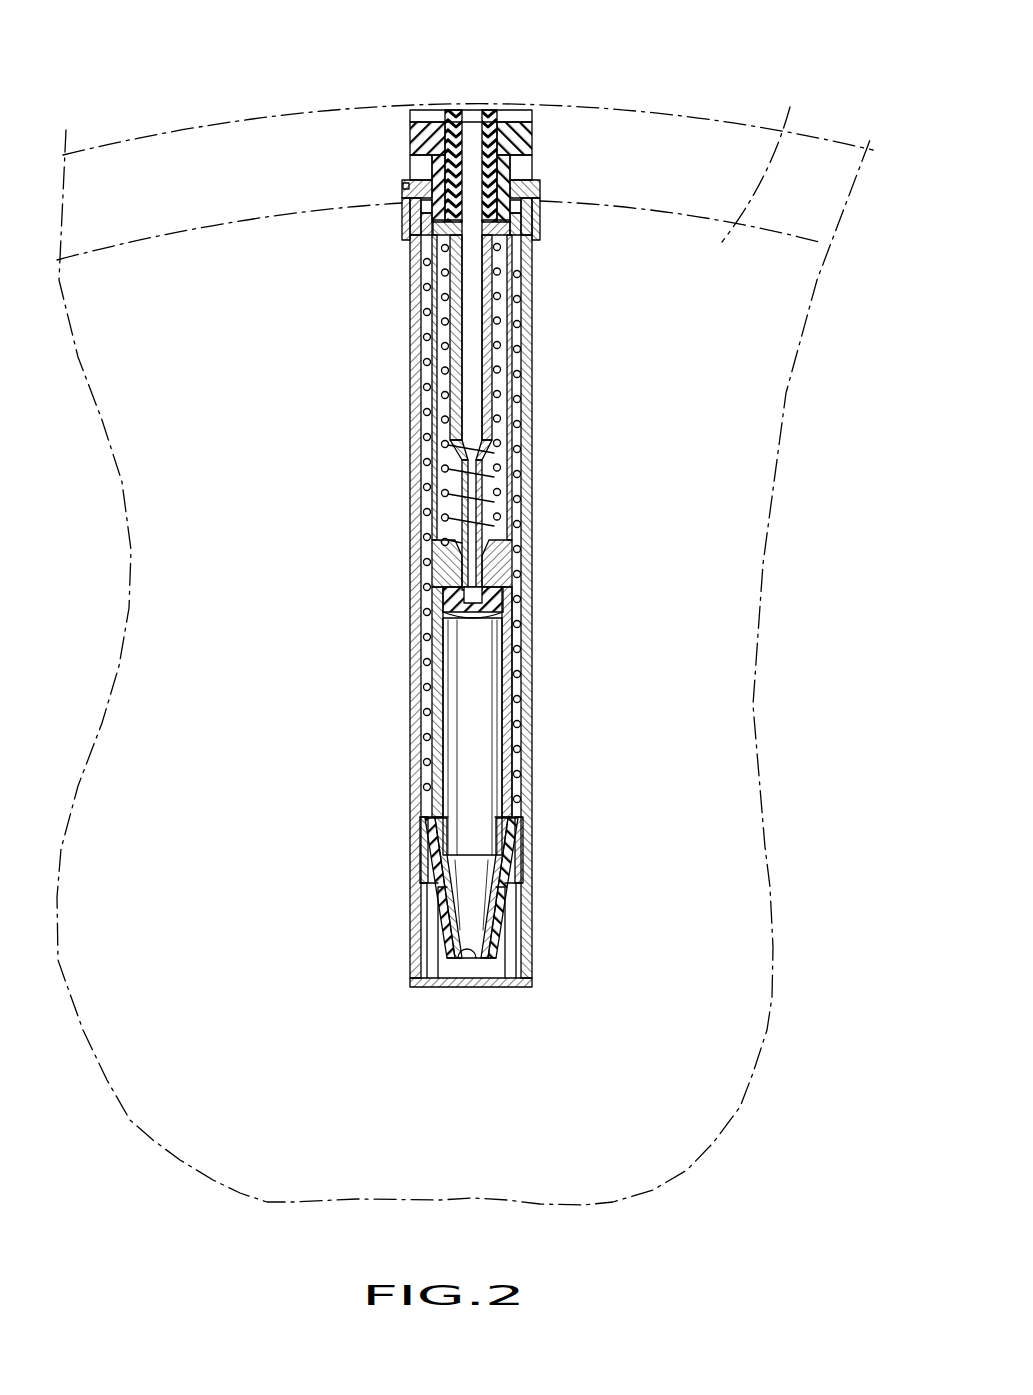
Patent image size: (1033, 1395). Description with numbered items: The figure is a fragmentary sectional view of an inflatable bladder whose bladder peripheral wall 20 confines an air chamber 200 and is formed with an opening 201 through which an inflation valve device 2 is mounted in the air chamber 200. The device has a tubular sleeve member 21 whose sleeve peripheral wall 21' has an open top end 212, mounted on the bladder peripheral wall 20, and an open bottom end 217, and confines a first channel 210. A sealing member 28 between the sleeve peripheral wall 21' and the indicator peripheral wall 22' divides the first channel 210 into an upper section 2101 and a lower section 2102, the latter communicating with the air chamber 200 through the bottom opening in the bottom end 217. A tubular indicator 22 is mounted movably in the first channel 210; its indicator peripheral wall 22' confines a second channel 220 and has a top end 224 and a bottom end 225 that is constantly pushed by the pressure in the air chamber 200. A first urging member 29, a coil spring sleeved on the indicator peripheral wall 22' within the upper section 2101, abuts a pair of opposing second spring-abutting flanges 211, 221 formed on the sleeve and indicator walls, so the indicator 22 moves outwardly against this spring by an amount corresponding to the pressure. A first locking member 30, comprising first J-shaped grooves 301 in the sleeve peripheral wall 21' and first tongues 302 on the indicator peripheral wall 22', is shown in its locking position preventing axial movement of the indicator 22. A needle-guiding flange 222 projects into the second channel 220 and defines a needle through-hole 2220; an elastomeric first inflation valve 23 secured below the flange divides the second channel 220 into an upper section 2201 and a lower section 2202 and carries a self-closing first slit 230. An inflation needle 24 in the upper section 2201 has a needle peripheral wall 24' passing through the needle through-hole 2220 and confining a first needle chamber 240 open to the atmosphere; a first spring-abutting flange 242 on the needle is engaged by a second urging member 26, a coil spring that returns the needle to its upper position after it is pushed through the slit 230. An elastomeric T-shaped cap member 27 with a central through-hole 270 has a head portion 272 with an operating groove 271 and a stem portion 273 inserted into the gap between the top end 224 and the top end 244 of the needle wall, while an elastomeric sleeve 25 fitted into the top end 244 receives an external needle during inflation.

The inflation valve device 2 is at (405, 539).
The bladder peripheral wall 20 is at (678, 130).
The air chamber 200 is at (463, 641).
The opening 201 is at (412, 153).
The tubular sleeve member 21 is at (379, 606).
The sleeve peripheral wall 21' is at (434, 606).
The first channel 210 is at (518, 680).
The upper section of the first channel 2101 is at (425, 732).
The lower section of the first channel 2102 is at (515, 930).
The second spring-abutting flange 211 is at (425, 245).
The top end of the sleeve peripheral wall 212 is at (406, 190).
The bottom end of the sleeve peripheral wall 217 is at (412, 983).
The tubular indicator 22 is at (561, 526).
The indicator peripheral wall 22' is at (380, 526).
The second channel 220 is at (455, 703).
The upper section of the second channel 2201 is at (495, 450).
The lower section of the second channel 2202 is at (480, 776).
The second spring-abutting flange 221 is at (432, 808).
The needle-guiding flange 222 is at (455, 563).
The needle through-hole 2220 is at (483, 568).
The top end of the indicator peripheral wall 224 is at (410, 172).
The bottom end of the indicator peripheral wall 225 is at (471, 958).
The first inflation valve 23 is at (500, 595).
The first slit 230 is at (505, 617).
The inflation needle 24 is at (547, 337).
The needle peripheral wall 24' is at (546, 446).
The first needle chamber 240 is at (473, 347).
The first spring-abutting flange 242 is at (515, 236).
The top end of the needle peripheral wall 244 is at (492, 108).
The elastomeric sleeve 25 is at (457, 108).
The second urging member 26 is at (500, 290).
The cap member 27 is at (518, 120).
The central through-hole 270 is at (438, 110).
The operating groove 271 is at (449, 112).
The head portion 272 is at (425, 120).
The stem portion 273 is at (513, 192).
The sealing member 28 is at (522, 857).
The first urging member 29 is at (517, 756).
The first locking member 30 is at (423, 215).
The first J-shaped grooves 301 is at (520, 216).
The first tongues 302 is at (525, 205).